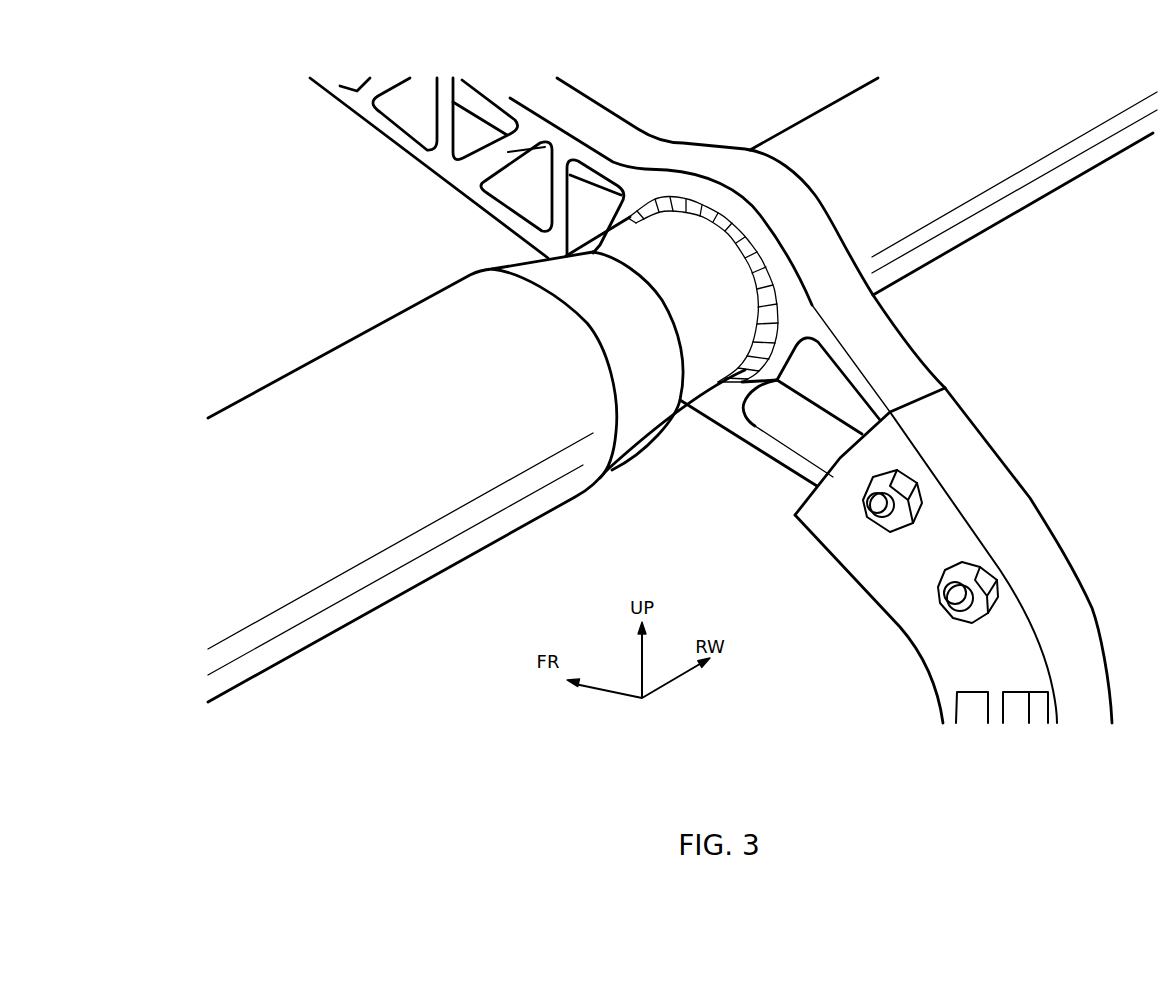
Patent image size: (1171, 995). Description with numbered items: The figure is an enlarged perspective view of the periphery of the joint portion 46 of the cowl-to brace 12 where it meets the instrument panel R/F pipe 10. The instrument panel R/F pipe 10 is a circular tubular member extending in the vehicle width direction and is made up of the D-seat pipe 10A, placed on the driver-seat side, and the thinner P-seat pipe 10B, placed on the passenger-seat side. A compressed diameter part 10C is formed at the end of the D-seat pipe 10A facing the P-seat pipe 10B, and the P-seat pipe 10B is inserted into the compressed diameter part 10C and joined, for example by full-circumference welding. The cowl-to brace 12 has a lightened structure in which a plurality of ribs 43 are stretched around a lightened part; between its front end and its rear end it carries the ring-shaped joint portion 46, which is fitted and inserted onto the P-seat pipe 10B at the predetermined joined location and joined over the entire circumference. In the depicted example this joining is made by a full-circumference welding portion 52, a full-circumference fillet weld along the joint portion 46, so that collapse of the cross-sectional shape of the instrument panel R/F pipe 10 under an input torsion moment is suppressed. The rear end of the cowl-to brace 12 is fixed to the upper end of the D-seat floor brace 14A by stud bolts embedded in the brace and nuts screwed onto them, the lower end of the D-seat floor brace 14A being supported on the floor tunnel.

The instrument panel R/F pipe 10 is at (673, 390).
The D-seat pipe 10A is at (315, 392).
The P-seat pipe 10B is at (992, 160).
The compressed diameter part 10C is at (640, 385).
The cowl-to brace 12 is at (467, 168).
The ribs 43 is at (503, 150).
The joint portion 46 is at (727, 279).
The full-circumference welding portion 52 is at (673, 203).
The D-seat floor brace 14A is at (984, 483).